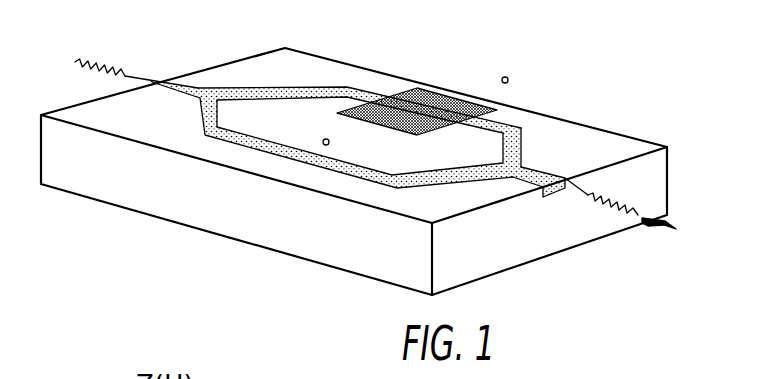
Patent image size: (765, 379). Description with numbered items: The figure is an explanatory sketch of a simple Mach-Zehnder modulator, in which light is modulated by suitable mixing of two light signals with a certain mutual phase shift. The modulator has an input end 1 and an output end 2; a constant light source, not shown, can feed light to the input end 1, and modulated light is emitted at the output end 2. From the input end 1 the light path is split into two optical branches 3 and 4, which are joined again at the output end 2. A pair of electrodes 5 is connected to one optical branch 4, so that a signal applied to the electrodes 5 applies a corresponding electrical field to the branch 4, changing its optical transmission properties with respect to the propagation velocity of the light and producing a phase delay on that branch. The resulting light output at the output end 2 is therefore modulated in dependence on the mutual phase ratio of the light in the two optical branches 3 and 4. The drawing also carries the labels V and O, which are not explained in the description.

The input end 1 is at (193, 86).
The output end 2 is at (541, 175).
The optical branch 3 is at (265, 147).
The optical branch 4 is at (348, 88).
The electrodes 5 is at (482, 101).
The voltage measurement point V is at (460, 98).
The center point O is at (375, 120).